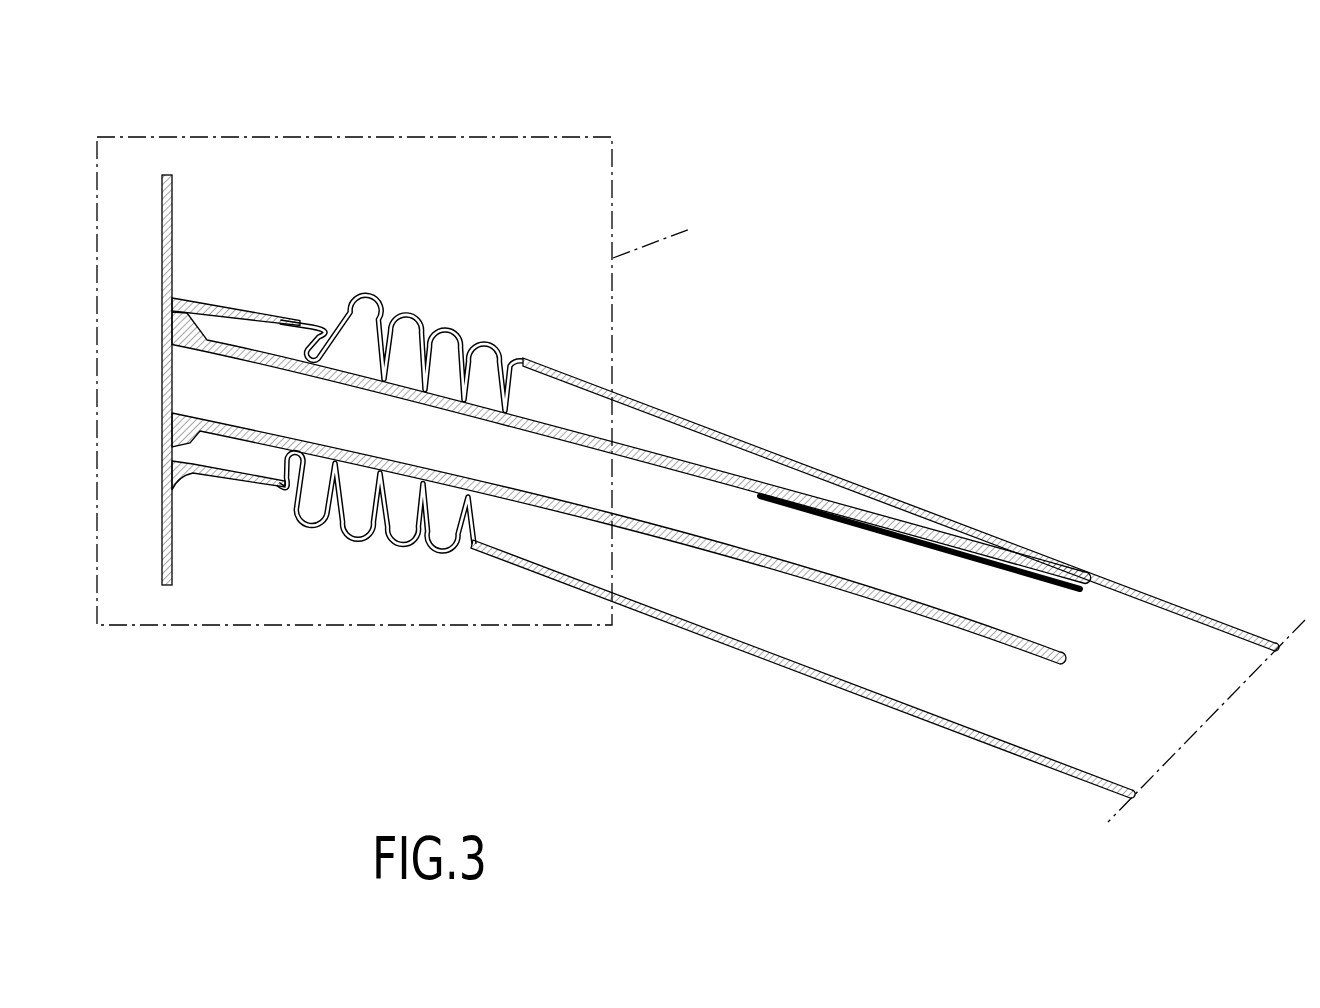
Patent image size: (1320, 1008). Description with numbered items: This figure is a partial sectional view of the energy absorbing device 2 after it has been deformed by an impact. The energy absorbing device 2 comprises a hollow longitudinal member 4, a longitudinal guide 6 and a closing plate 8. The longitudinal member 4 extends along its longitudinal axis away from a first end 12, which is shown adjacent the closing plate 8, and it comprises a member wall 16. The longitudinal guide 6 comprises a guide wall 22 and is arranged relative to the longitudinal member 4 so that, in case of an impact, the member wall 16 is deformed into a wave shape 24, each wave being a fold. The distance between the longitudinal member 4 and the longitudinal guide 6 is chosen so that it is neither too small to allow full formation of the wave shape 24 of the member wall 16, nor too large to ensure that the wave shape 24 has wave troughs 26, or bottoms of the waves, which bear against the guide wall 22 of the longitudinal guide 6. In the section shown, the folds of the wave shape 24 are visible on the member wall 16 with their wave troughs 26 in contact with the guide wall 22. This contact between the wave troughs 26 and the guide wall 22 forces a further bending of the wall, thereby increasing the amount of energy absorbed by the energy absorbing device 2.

The energy absorbing device 2 is at (646, 187).
The hollow longitudinal member 4 is at (944, 496).
The longitudinal guide 6 is at (945, 645).
The closing plate 8 is at (170, 166).
The first end 12 is at (144, 124).
The member wall 16 is at (784, 458).
The guide wall 22 is at (829, 592).
The wave shape 24 is at (463, 310).
The wave troughs 26 is at (367, 368).